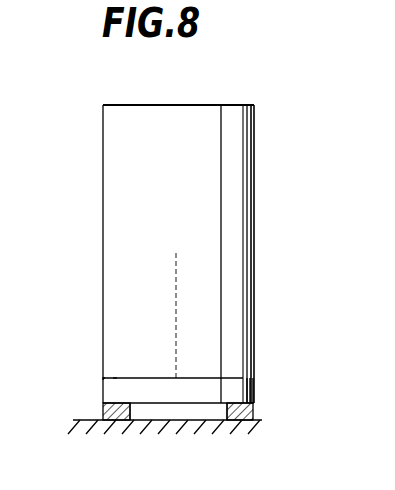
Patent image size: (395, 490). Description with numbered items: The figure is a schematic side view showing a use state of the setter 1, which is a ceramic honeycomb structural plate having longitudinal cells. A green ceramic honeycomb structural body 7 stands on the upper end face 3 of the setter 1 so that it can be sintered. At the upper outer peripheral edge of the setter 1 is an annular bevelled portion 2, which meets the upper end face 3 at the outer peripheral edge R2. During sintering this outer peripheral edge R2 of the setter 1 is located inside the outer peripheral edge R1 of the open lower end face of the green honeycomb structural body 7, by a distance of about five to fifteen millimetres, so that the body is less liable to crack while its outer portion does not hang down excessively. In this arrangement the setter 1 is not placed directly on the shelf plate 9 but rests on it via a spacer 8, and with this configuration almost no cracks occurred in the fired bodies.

The setter 1 is at (195, 387).
The bevelled portion 2 is at (246, 386).
The upper end face 3 is at (157, 378).
The green ceramic honeycomb structural body 7 is at (236, 243).
The spacer 8 is at (252, 410).
The shelf plate 9 is at (258, 424).
The outer peripheral edge of the open lower end face R1 is at (102, 380).
The outer peripheral edge of the upper end face R2 is at (115, 378).